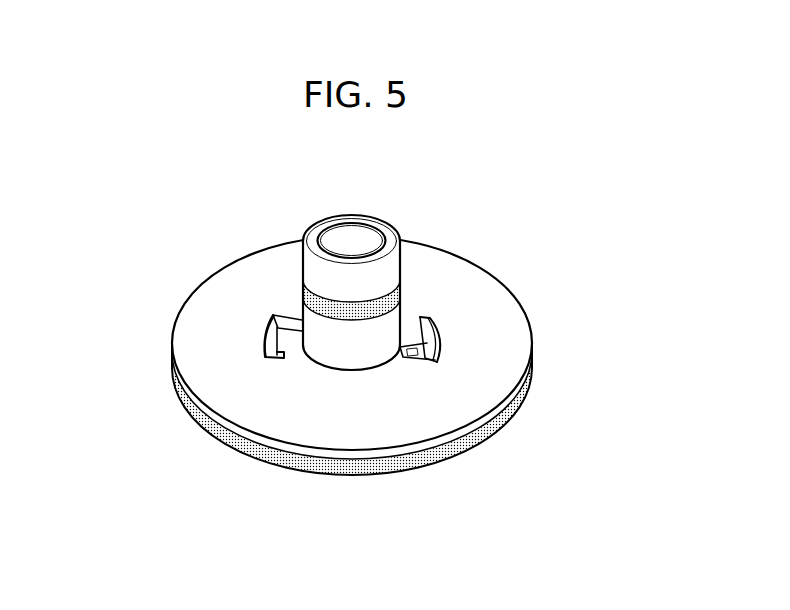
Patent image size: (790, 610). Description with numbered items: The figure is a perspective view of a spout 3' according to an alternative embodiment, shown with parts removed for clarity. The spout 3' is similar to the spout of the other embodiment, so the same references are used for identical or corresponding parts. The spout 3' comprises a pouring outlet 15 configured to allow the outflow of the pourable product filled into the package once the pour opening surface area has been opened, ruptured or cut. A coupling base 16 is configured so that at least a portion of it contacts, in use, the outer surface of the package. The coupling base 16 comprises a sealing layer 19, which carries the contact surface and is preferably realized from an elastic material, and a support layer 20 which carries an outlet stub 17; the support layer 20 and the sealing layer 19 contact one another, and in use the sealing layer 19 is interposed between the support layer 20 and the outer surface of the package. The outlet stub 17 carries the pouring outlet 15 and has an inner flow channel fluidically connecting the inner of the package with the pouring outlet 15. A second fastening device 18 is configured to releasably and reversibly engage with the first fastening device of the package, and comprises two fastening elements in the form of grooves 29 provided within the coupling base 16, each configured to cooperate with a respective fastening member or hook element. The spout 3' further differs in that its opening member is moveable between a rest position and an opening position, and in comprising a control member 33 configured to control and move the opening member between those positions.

The spout 3' is at (574, 207).
The pouring outlet 15 is at (356, 228).
The coupling base 16 is at (357, 370).
The outlet stub 17 is at (377, 282).
The second fastening device 18 is at (195, 303).
The sealing layer 19 is at (407, 463).
The support layer 20 is at (257, 438).
The groove 29 is at (201, 335).
The control member 33 is at (345, 311).